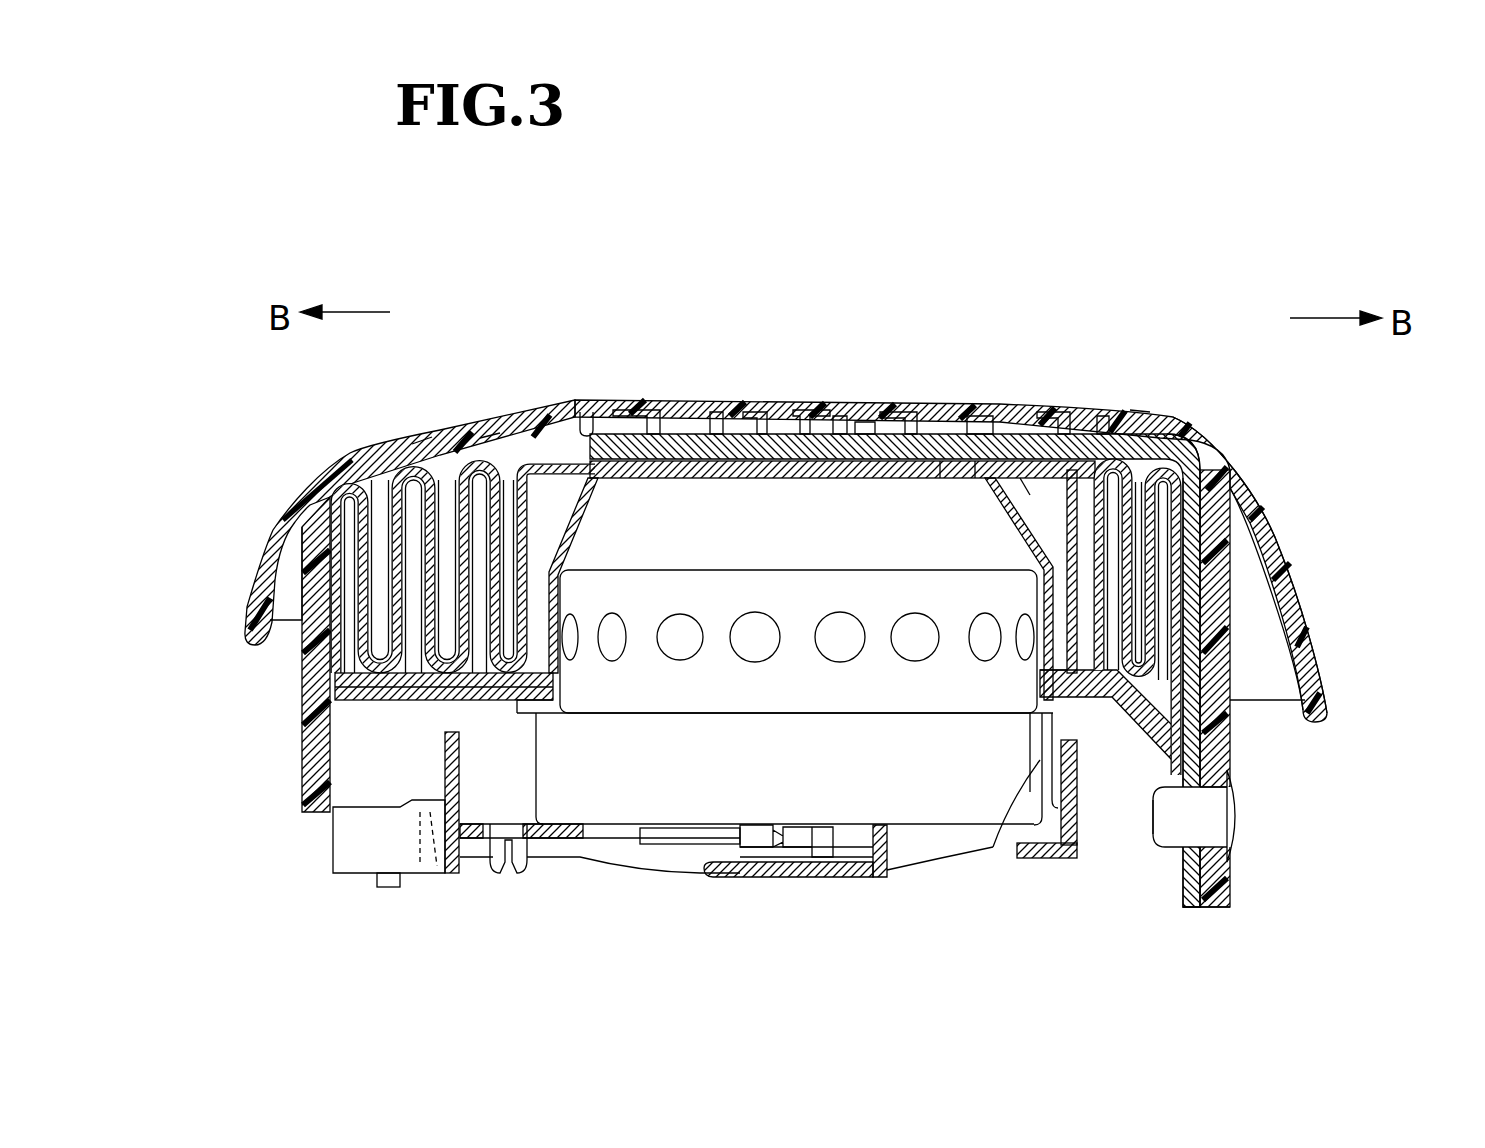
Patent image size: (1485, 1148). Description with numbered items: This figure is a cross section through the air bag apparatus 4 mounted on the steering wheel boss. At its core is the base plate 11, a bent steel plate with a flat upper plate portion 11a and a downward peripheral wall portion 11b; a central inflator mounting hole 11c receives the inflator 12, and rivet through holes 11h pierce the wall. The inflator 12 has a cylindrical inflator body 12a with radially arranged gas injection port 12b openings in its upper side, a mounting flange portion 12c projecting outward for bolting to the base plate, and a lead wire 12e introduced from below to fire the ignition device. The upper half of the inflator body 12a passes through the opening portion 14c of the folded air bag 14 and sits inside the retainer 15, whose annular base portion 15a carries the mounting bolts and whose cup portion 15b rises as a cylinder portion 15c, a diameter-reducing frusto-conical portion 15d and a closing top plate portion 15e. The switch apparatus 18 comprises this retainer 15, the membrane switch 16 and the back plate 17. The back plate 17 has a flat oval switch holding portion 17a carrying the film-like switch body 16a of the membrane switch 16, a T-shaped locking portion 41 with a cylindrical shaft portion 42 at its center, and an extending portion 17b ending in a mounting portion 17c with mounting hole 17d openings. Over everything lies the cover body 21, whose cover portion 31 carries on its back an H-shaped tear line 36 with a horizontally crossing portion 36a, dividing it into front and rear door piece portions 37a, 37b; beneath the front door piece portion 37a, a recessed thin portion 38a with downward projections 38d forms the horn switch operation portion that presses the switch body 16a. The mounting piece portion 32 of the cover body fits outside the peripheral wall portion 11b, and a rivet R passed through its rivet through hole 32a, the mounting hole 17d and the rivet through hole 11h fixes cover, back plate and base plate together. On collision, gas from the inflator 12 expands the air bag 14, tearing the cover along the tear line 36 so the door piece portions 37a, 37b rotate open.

The air bag apparatus 4 is at (1200, 396).
The base plate 11 is at (1180, 900).
The upper plate portion 11a is at (1087, 703).
The peripheral wall portion 11b is at (1180, 856).
The inflator mounting hole 11c is at (1033, 720).
The rivet through hole 11h is at (1153, 840).
The inflator 12 is at (862, 570).
The inflator body 12a is at (800, 592).
The gas injection port 12b is at (755, 620).
The mounting flange portion 12c is at (518, 713).
The lead wire 12e is at (668, 845).
The air bag 14 is at (1173, 533).
The opening portion 14c is at (1040, 678).
The retainer 15 is at (1072, 440).
The base portion 15a is at (1075, 688).
The cup portion 15b is at (1025, 478).
The cylinder portion 15c is at (1067, 627).
The frusto-conical portion 15d is at (1210, 445).
The top plate portion 15e is at (947, 434).
The membrane switch 16 is at (750, 433).
The back plate 17 is at (836, 460).
The switch body 16a is at (793, 432).
The switch holding portion 17a is at (978, 461).
The extending portion 17b is at (1187, 590).
The mounting portion 17c is at (1190, 908).
The mounting hole 17d is at (1228, 772).
The switch apparatus 18 is at (887, 217).
The cover body 21 is at (543, 424).
The cover portion 31 is at (492, 430).
The mounting piece portion 32 is at (302, 712).
The rivet through hole 32a is at (1232, 853).
The tear line 36 is at (610, 433).
The horizontally crossing portion 36a is at (583, 400).
The front door piece portion 37a is at (1140, 408).
The rear door piece portion 37b is at (428, 437).
The thin portion 38a is at (690, 408).
The projections 38d is at (745, 425).
The locking portion 41 is at (846, 434).
The shaft portion 42 is at (866, 430).
The rivet R is at (1242, 815).